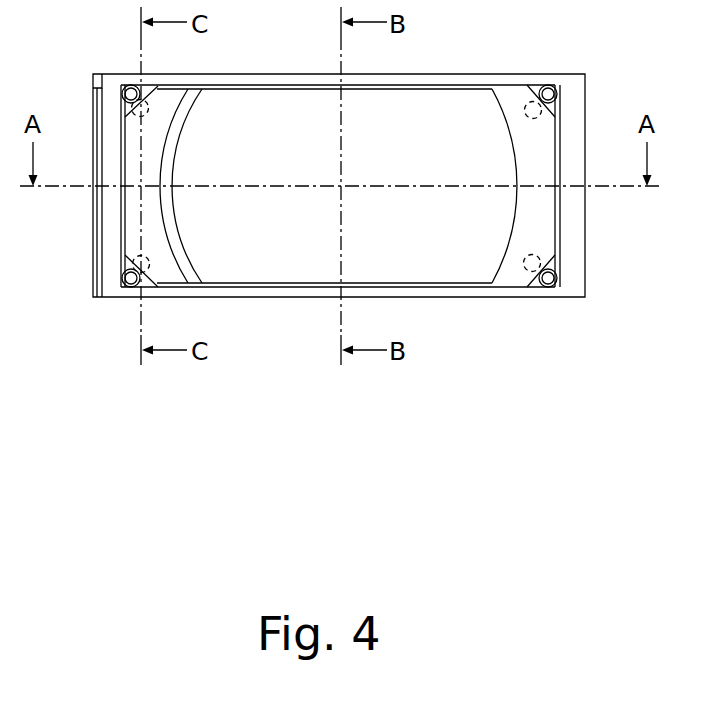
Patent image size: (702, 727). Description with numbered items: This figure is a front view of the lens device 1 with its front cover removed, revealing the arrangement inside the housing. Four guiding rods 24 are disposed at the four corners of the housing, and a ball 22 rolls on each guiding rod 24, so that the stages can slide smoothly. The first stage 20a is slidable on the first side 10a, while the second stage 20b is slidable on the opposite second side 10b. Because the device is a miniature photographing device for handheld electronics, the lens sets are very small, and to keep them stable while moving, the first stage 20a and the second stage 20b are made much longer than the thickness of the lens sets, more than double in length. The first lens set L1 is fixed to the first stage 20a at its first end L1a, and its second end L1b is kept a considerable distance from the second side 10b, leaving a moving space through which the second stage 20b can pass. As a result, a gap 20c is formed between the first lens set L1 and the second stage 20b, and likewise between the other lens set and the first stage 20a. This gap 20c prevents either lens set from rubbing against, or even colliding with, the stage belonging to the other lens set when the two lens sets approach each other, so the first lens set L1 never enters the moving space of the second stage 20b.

The lens device 1 is at (596, 89).
The first side 10a is at (560, 261).
The second side 10b is at (122, 262).
The first stage 20a is at (546, 213).
The second stage 20b is at (130, 213).
The gap 20c is at (173, 232).
The ball 22 is at (118, 120).
The guiding rod 24 is at (127, 86).
The first lens set L1 is at (455, 263).
The first end of the first lens set L1a is at (502, 142).
The second end of the first lens set L1b is at (190, 147).